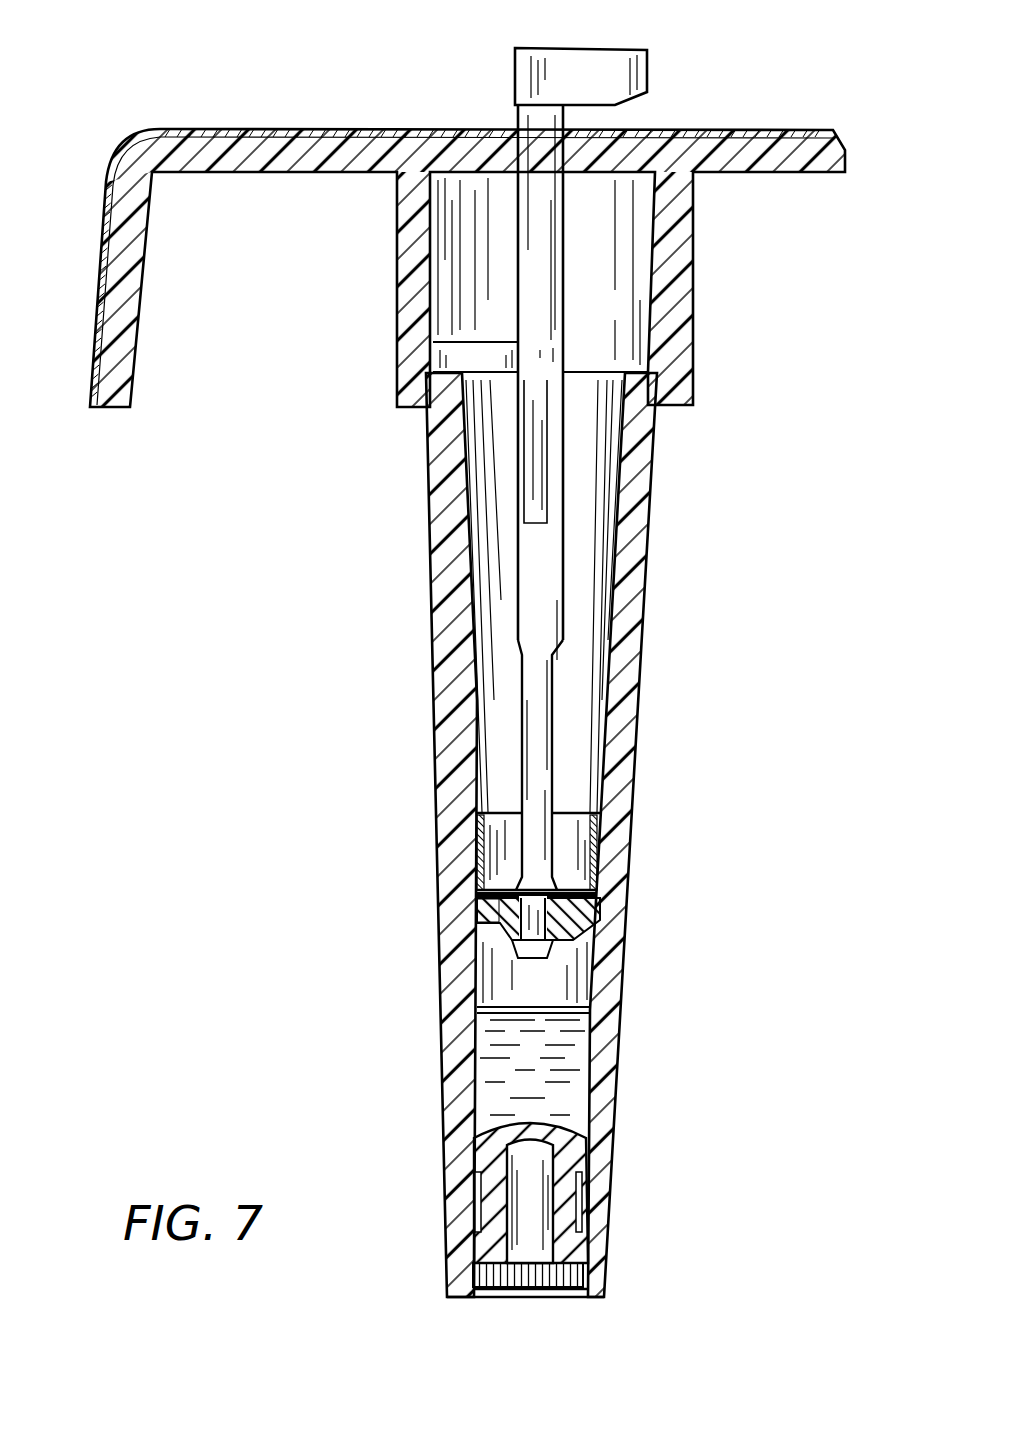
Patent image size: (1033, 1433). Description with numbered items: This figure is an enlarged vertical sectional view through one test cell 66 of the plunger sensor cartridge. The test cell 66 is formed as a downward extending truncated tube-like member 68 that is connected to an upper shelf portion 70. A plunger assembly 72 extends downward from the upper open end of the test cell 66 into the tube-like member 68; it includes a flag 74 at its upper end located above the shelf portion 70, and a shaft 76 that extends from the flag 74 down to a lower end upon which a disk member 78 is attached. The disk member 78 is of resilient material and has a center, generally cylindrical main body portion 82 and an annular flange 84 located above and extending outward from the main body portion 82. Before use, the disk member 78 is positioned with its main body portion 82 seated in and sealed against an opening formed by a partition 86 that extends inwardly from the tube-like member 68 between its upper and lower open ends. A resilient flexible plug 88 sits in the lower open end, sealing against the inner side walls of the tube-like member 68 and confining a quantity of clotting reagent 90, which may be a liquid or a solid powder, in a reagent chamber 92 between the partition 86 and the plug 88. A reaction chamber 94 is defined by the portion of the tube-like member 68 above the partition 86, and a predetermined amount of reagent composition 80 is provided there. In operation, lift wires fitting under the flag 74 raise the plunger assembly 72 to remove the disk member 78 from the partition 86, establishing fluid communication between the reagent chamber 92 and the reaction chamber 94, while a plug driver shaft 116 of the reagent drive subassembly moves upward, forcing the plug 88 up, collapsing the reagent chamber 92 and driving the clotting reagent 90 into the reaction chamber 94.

The test cell 66 is at (549, 737).
The tube-like member 68 is at (637, 513).
The upper shelf portion 70 is at (240, 150).
The plunger assembly 72 is at (510, 597).
The flag 74 is at (596, 70).
The shaft 76 is at (538, 698).
The disk member 78 is at (560, 918).
The reagent composition 80 is at (598, 830).
The main body portion 82 is at (583, 927).
The annular flange 84 is at (598, 895).
The partition 86 is at (487, 920).
The plug 88 is at (565, 1187).
The clotting reagent 90 is at (553, 1068).
The reagent chamber 92 is at (526, 1074).
The reaction chamber 94 is at (494, 429).
The plug driver shaft 116 is at (527, 1205).